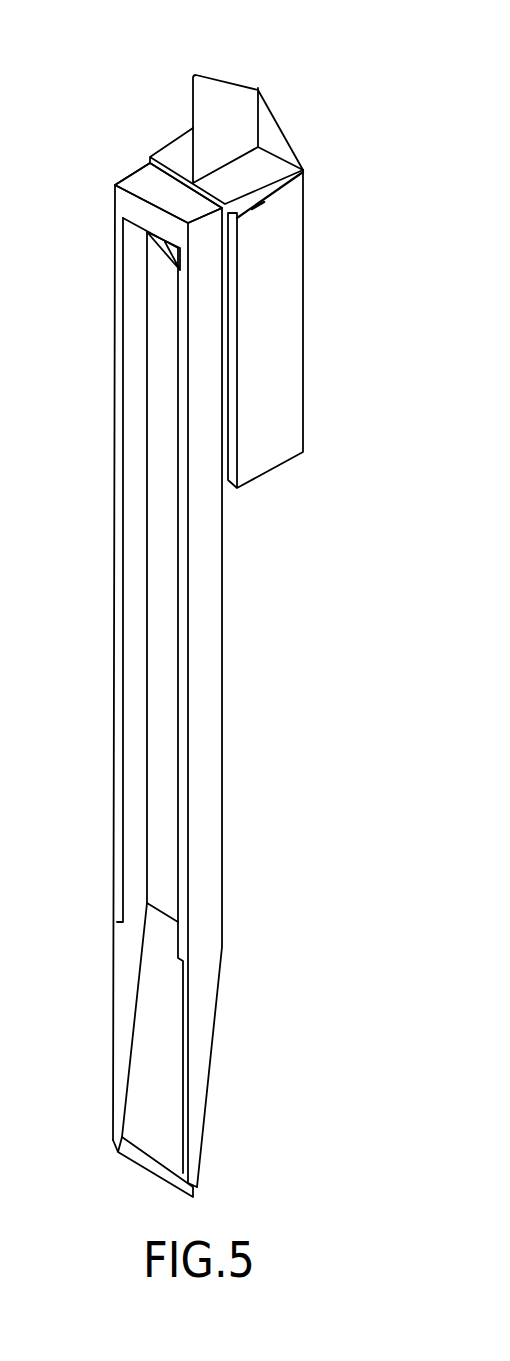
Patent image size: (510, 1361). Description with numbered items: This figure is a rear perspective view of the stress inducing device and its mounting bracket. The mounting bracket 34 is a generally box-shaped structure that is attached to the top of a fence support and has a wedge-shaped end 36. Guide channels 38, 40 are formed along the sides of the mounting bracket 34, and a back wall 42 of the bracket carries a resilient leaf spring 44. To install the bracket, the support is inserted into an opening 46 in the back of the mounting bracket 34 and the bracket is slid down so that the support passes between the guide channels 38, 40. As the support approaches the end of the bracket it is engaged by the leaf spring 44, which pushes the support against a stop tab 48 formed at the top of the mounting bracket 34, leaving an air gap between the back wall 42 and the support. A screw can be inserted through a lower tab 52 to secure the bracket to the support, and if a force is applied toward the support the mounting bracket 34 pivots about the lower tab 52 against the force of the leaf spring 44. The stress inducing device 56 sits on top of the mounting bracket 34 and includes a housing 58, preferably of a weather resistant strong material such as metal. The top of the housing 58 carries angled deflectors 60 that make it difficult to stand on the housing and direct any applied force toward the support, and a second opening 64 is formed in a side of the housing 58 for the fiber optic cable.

The mounting bracket 34 is at (254, 662).
The wedge-shaped end 36 is at (212, 1037).
The guide channel 38 is at (133, 619).
The guide channel 40 is at (176, 722).
The back wall 42 is at (160, 443).
The resilient leaf spring 44 is at (173, 261).
The opening 46 is at (153, 949).
The stop tab 48 is at (140, 210).
The lower tab 52 is at (195, 1187).
The stress inducing device 56 is at (331, 177).
The housing 58 is at (282, 415).
The angled deflector 60 is at (225, 98).
The second opening 64 is at (266, 204).